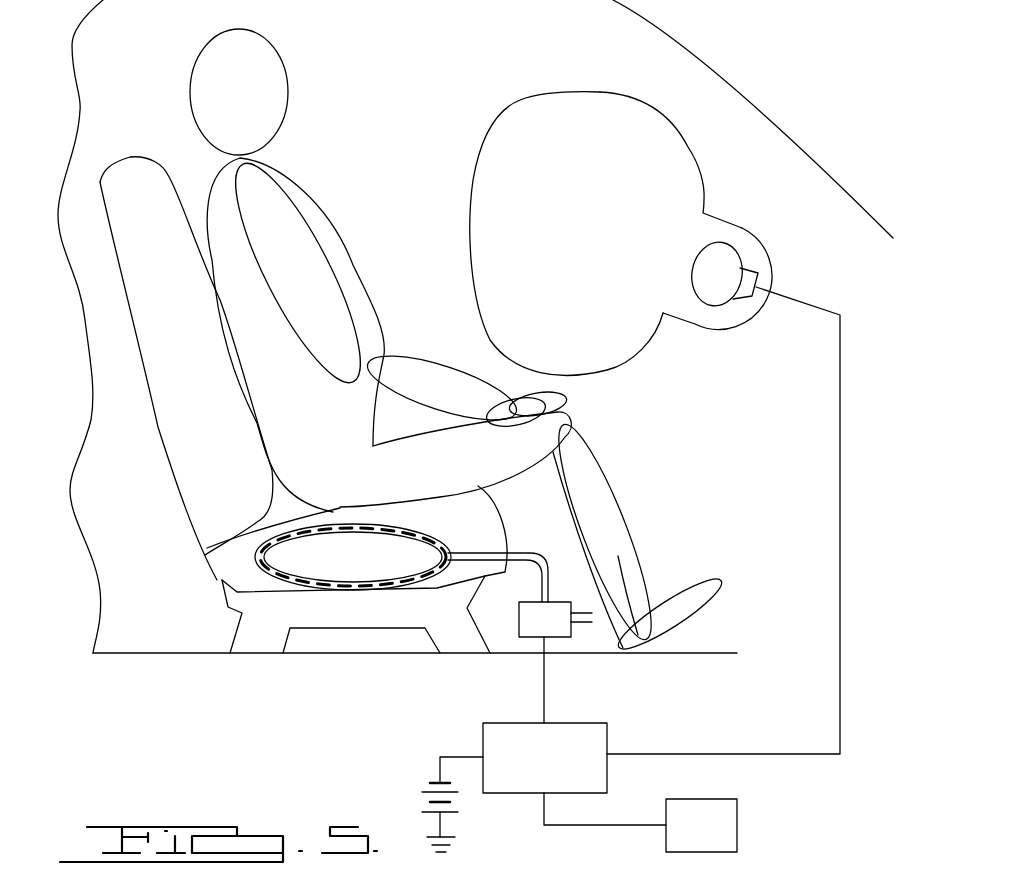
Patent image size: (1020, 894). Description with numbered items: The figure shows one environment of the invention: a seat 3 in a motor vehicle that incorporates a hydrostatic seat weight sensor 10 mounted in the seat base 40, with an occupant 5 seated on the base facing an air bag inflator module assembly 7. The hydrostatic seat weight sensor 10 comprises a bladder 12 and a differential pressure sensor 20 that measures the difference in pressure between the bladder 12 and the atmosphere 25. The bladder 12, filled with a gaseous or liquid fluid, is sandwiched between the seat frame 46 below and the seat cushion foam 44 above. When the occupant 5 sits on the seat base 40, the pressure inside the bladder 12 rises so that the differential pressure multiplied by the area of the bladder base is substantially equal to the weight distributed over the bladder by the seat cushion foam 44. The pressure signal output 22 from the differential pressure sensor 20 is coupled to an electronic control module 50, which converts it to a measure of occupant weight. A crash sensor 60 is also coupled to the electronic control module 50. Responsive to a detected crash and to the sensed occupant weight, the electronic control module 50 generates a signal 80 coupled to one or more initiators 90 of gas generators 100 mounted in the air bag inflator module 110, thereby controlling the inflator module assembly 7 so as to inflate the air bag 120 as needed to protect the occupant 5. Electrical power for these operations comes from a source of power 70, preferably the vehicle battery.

The seat 3 is at (159, 425).
The occupant 5 is at (300, 206).
The air bag inflator module assembly 7 is at (700, 128).
The hydrostatic seat weight sensor 10 is at (355, 512).
The bladder 12 is at (330, 527).
The differential pressure sensor 20 is at (557, 628).
The pressure signal output 22 is at (543, 692).
The atmosphere 25 is at (737, 627).
The seat base 40 is at (517, 513).
The seat cushion foam 44 is at (250, 534).
The seat frame 46 is at (327, 615).
The electronic control module 50 is at (607, 738).
The crash sensor 60 is at (737, 832).
The source of power 70 is at (421, 803).
The signal 80 is at (843, 390).
The initiator 90 is at (762, 277).
The gas generator 100 is at (729, 248).
The air bag inflator module 110 is at (698, 325).
The air bag 120 is at (622, 94).